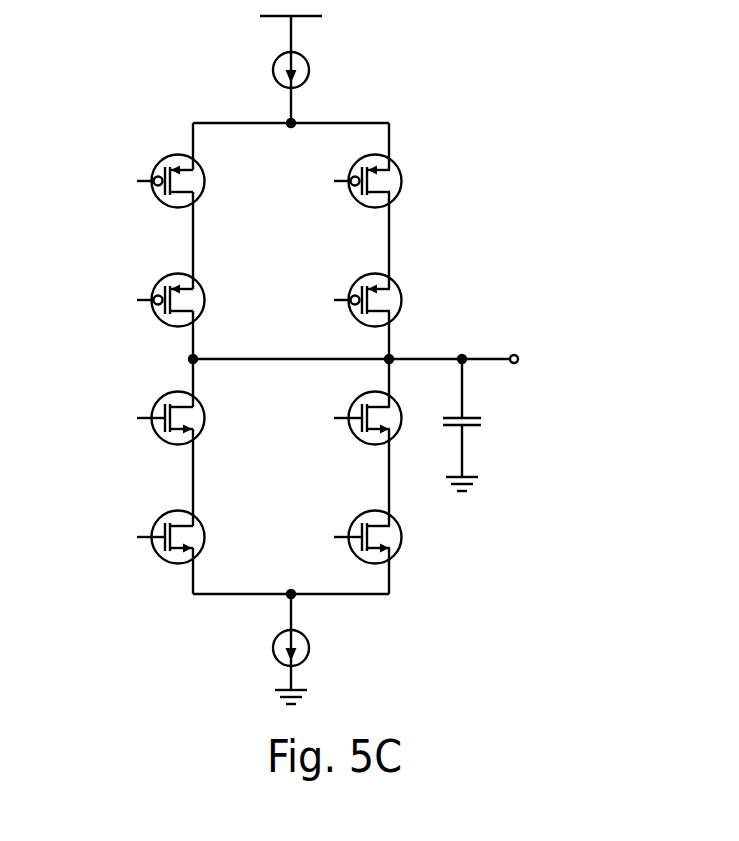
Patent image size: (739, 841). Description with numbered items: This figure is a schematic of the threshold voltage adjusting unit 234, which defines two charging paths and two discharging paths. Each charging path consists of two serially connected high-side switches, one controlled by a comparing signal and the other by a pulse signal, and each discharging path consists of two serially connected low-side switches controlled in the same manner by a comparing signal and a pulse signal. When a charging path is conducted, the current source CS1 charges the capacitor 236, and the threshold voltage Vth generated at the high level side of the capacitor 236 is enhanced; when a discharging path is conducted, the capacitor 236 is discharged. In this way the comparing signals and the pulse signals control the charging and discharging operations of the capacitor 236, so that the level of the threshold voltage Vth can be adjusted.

The threshold voltage adjusting unit 234 is at (305, 360).
The capacitor 236 is at (488, 421).
The current source CS1 is at (311, 69).
The threshold voltage Vth is at (513, 358).